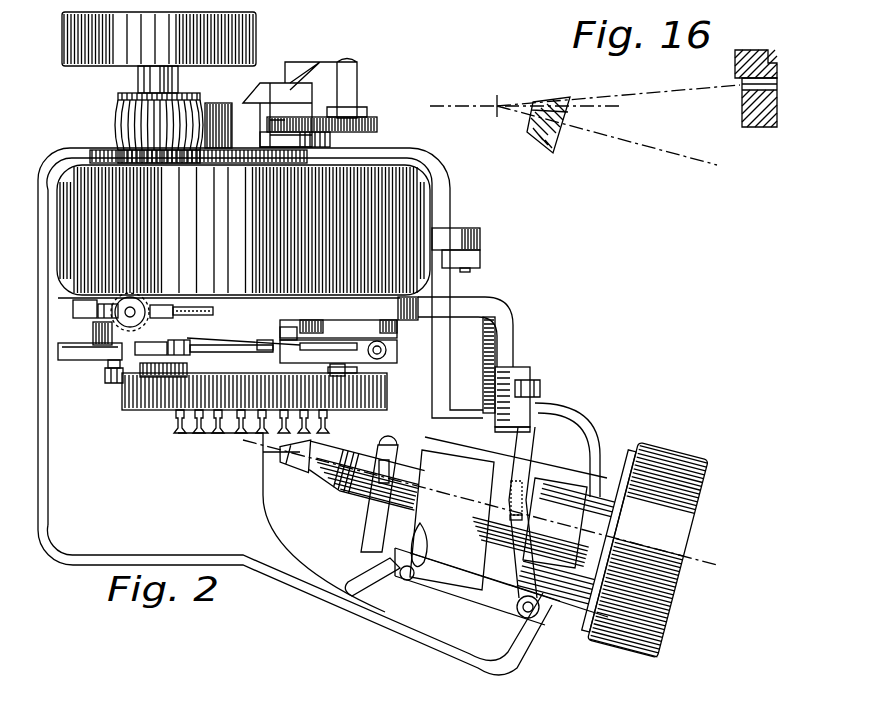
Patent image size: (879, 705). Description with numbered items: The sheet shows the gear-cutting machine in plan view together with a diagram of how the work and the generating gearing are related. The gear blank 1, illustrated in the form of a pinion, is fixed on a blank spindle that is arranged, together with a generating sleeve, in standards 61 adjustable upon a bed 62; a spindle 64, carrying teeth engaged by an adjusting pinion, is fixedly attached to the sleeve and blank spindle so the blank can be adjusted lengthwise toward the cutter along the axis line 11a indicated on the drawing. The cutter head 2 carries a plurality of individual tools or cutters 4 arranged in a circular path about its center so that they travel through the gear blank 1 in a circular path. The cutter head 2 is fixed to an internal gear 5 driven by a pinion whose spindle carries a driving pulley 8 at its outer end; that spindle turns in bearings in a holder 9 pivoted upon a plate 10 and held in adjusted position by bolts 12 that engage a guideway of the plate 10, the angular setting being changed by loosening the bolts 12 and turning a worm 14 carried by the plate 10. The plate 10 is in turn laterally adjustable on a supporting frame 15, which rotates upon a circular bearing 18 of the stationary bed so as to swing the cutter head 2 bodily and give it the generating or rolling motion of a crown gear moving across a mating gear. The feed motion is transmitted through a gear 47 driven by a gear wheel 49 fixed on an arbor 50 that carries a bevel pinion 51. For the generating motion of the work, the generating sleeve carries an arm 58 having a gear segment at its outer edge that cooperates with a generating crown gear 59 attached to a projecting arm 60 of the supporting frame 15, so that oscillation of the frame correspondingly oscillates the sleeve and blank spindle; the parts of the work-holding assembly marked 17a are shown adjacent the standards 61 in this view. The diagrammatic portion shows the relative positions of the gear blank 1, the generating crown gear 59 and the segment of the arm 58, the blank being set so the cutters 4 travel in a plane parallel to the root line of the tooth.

In FIG. 2, the gear blank 1 is at (303, 460).
In FIG. 16, the gear blank 1 is at (548, 133).
In FIG. 2, the cutter head 2 is at (216, 427).
In FIG. 2, the individual tools or cutters 4 is at (192, 425).
In FIG. 2, the internal gear 5 is at (140, 390).
In FIG. 2, the driving pulley 8 is at (159, 87).
In FIG. 2, the holder 9 is at (110, 355).
In FIG. 2, the plate 10 is at (100, 326).
In FIG. 2, the axis line 11a is at (481, 508).
In FIG. 2, the bolts 12 is at (360, 368).
In FIG. 2, the worm 14 is at (388, 352).
In FIG. 2, the supporting frame 15 is at (169, 312).
In FIG. 2, the electromagnet coil 17a is at (590, 478).
In FIG. 2, the circular bearing 18 is at (268, 231).
In FIG. 2, the gear 47 is at (290, 122).
In FIG. 2, the gear wheel 49 is at (377, 122).
In FIG. 2, the arbor 50 is at (347, 92).
In FIG. 2, the bevel pinion 51 is at (367, 109).
In FIG. 2, the arm 58 is at (527, 452).
In FIG. 16, the arm 58 is at (753, 107).
In FIG. 2, the generating crown gear 59 is at (528, 424).
In FIG. 16, the generating crown gear 59 is at (735, 64).
In FIG. 2, the projecting arm 60 is at (503, 354).
In FIG. 2, the standards 61 is at (493, 505).
In FIG. 2, the bed 62 is at (418, 608).
In FIG. 2, the spindle 64 is at (456, 575).